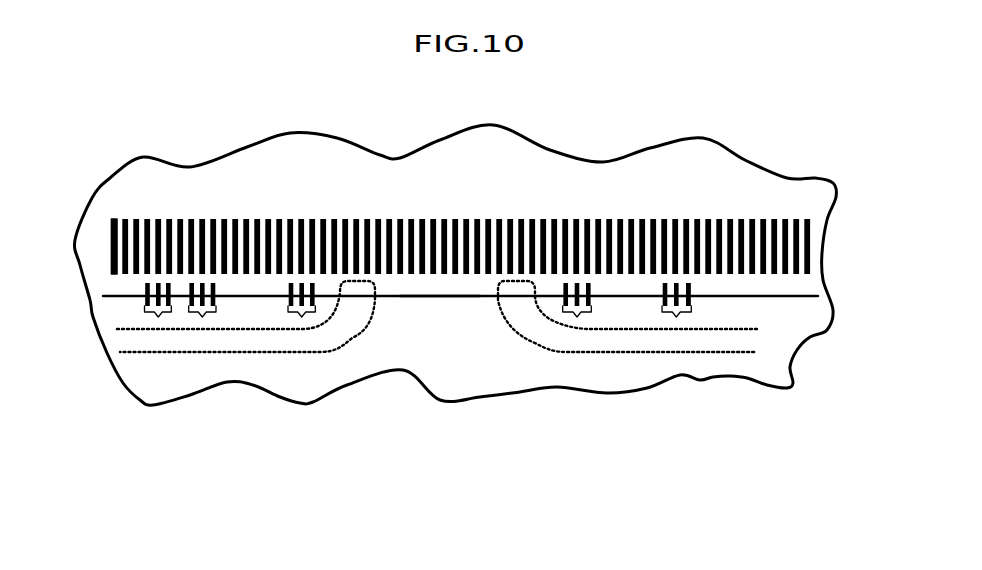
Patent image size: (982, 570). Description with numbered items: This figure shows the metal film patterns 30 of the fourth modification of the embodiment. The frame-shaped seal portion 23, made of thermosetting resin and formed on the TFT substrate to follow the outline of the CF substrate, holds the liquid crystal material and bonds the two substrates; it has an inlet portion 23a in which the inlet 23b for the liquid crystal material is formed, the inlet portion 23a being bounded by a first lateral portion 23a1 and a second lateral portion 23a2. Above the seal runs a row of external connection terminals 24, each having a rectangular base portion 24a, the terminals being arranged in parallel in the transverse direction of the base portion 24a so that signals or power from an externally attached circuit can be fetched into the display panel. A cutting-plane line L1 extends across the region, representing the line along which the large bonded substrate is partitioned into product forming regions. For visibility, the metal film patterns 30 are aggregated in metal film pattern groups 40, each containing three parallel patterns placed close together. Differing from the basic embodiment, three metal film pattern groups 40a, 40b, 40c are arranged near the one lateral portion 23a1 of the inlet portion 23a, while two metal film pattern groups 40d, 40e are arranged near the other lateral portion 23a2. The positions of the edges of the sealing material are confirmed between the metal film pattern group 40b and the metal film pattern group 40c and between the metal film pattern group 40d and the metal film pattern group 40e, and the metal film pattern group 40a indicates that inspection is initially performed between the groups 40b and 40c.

The seal portion 23 is at (645, 352).
The inlet portion 23a is at (437, 335).
The lateral portion 23a1 is at (349, 298).
The lateral portion 23a2 is at (520, 317).
The inlet 23b is at (437, 297).
The external connection terminal 24 is at (462, 174).
The base portion 24a is at (110, 238).
The metal film pattern 30 is at (690, 301).
The metal film pattern group 40 is at (422, 387).
The metal film pattern group 40a is at (157, 318).
The metal film pattern group 40b is at (202, 318).
The metal film pattern group 40c is at (301, 318).
The metal film pattern group 40d is at (577, 318).
The metal film pattern group 40e is at (676, 318).
The cutting-plane line L1 is at (812, 296).